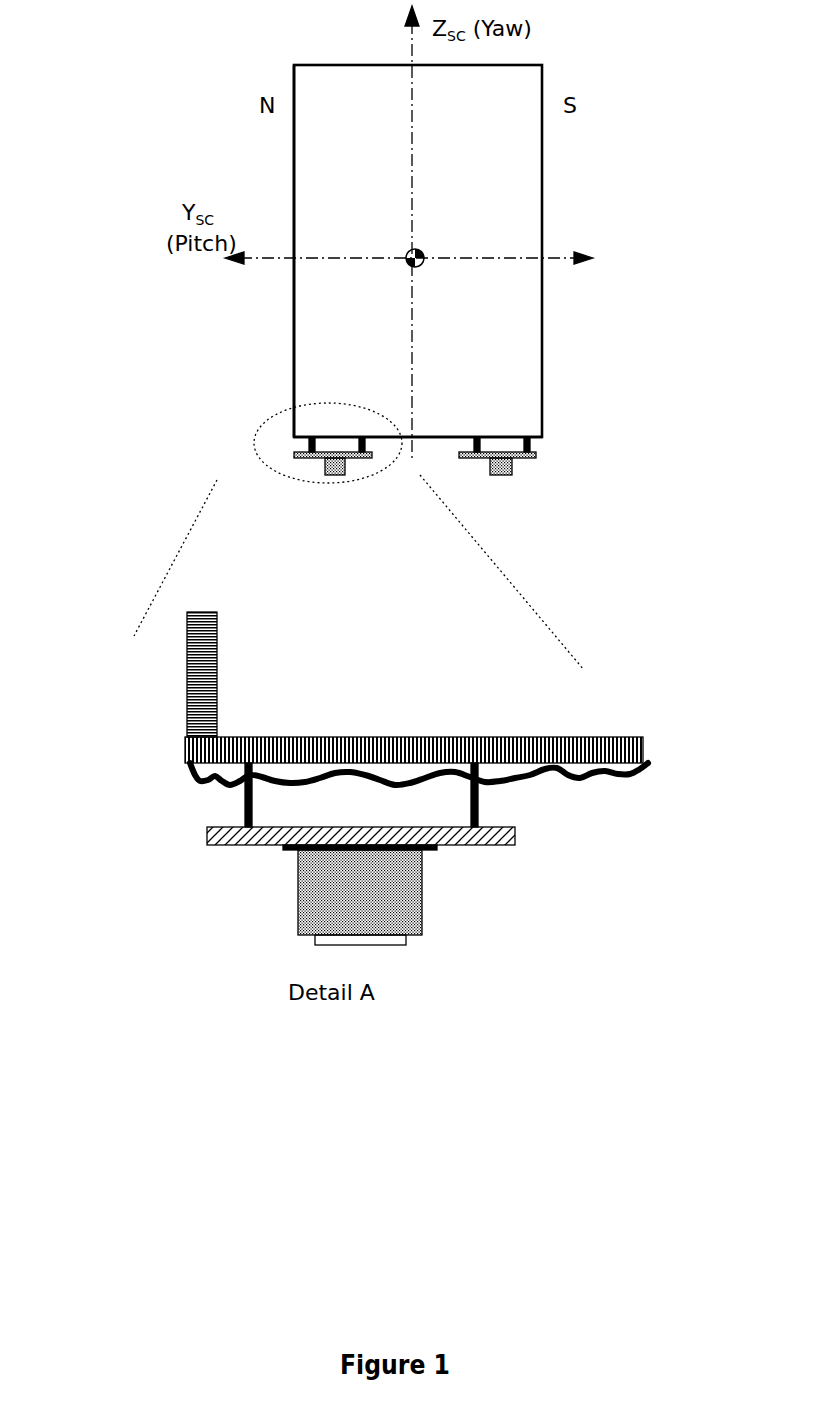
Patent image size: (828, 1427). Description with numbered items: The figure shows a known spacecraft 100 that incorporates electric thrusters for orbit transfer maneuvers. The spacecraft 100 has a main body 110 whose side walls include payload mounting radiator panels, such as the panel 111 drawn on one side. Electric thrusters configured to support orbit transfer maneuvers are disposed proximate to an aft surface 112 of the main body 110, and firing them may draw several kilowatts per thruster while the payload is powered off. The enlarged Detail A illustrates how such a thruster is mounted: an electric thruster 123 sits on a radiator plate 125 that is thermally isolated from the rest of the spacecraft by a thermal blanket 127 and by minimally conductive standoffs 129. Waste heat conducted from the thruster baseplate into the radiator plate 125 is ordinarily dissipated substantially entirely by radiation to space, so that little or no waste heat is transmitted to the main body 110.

The spacecraft 100 is at (198, 38).
The main body 110 is at (524, 200).
The payload mounting radiator panel 111 is at (294, 344).
The aft surface 112 is at (447, 437).
The electric thruster 123 is at (298, 892).
The radiator plate 125 is at (205, 828).
The thermal blanket 127 is at (568, 783).
The minimally conductive standoffs 129 is at (243, 802).